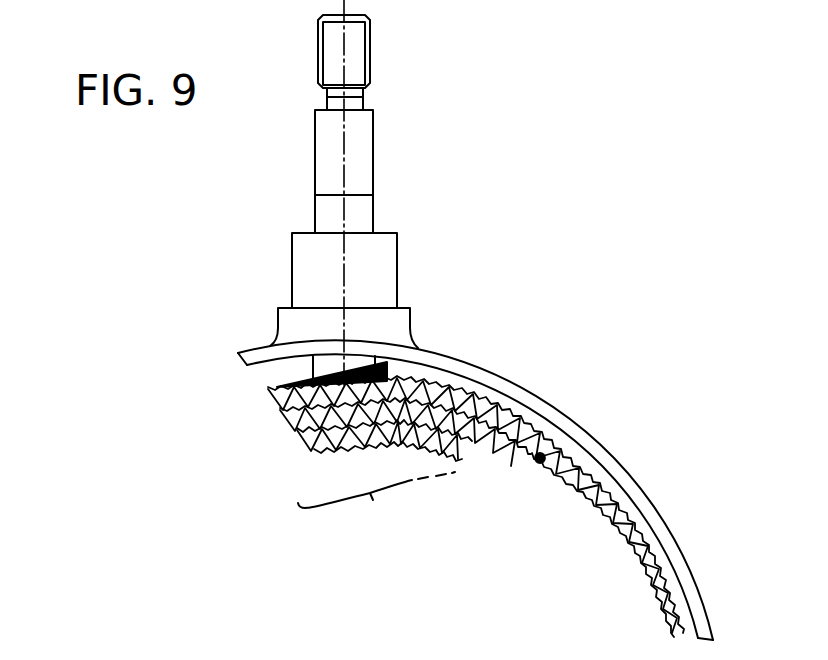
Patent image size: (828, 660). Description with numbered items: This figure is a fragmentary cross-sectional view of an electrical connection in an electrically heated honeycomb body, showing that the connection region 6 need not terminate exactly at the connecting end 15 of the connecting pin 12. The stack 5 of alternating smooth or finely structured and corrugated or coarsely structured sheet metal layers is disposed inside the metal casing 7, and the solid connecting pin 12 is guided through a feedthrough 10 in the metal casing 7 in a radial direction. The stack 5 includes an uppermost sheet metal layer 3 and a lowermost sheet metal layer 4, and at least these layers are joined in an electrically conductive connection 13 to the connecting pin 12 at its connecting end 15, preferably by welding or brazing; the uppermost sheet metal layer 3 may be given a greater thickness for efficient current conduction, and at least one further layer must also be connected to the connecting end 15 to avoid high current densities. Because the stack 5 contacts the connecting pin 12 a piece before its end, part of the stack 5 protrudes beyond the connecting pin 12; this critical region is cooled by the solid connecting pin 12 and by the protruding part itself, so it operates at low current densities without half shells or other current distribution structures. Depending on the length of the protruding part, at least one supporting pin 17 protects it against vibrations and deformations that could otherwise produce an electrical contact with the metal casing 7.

The uppermost sheet metal layer 3 is at (449, 469).
The lowermost sheet metal layer 4 is at (488, 460).
The stack 5 is at (365, 474).
The connection region 6 is at (376, 511).
The metal casing 7 is at (520, 390).
The feedthrough 10 is at (397, 268).
The connecting pin 12 is at (367, 67).
The electrically conductive connection 13 is at (290, 381).
The connecting end 15 is at (277, 387).
The supporting pin 17 is at (540, 464).